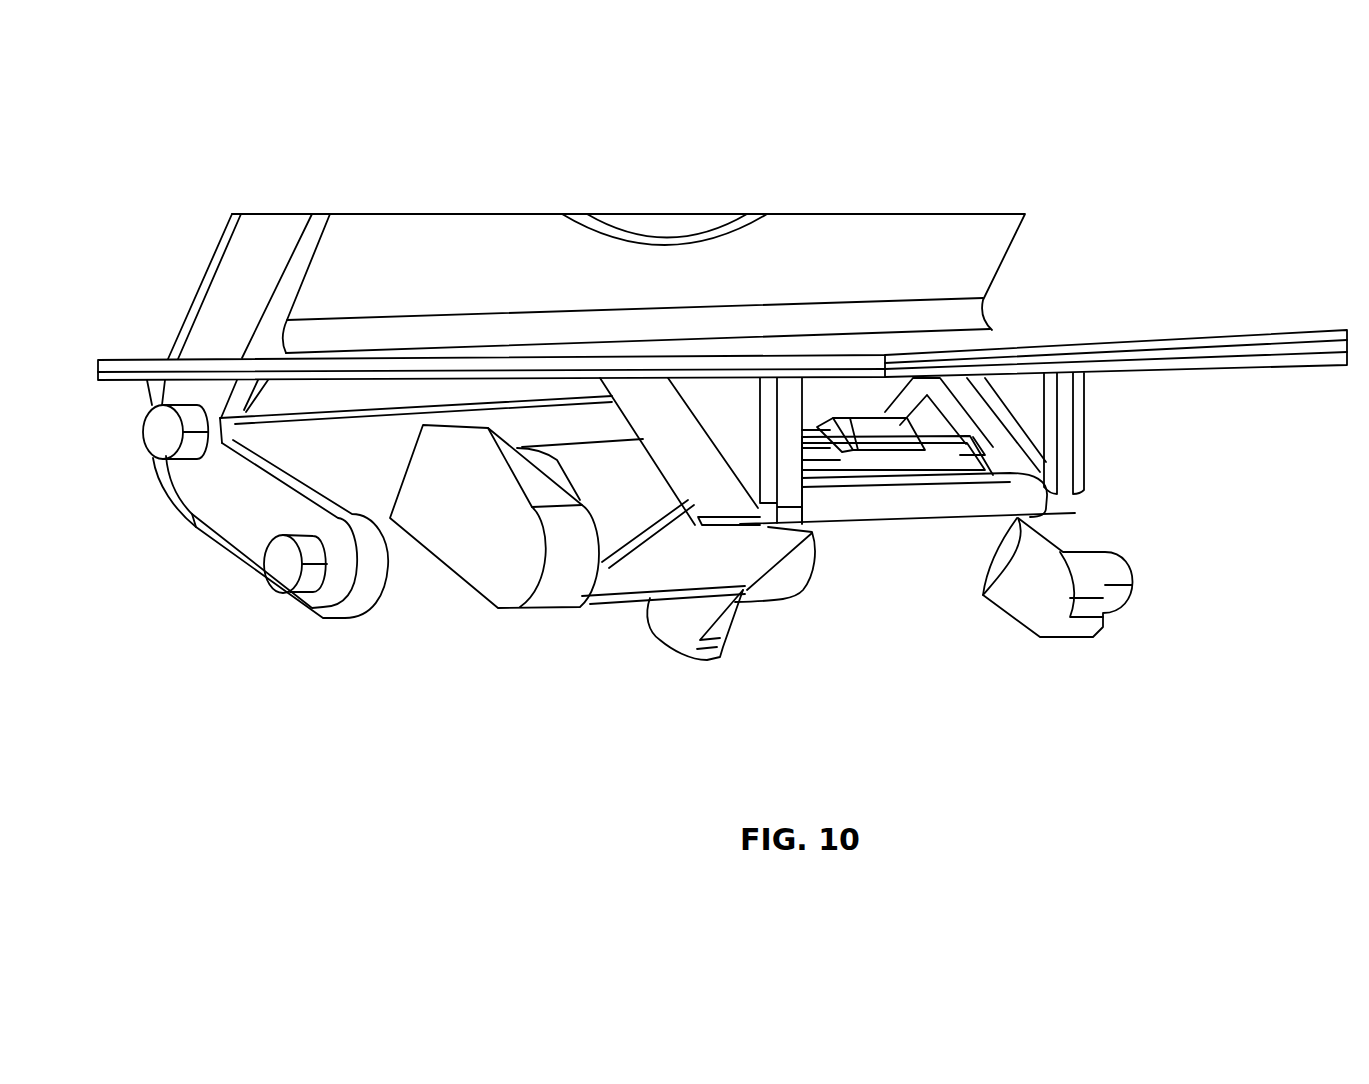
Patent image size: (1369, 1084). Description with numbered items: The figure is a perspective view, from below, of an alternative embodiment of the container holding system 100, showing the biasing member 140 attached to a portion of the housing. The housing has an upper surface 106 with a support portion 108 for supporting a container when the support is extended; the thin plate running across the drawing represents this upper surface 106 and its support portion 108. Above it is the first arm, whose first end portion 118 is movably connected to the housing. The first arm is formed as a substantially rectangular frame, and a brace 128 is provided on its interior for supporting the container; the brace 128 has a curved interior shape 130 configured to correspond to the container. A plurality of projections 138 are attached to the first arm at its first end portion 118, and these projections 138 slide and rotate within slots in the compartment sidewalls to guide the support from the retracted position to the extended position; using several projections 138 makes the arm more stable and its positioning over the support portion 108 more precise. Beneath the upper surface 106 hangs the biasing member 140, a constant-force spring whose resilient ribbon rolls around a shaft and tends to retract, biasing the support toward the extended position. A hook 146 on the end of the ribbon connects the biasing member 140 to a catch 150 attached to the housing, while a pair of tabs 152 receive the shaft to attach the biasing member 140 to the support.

The container holding system 100 is at (698, 464).
The upper surface 106 is at (1317, 347).
The support portion 108 is at (1097, 338).
The first end portion 118 is at (207, 325).
The brace 128 is at (661, 253).
The interior shape 130 is at (727, 233).
The projection 138 is at (162, 433).
The biasing member 140 is at (663, 556).
The hook 146 is at (880, 437).
The catch 150 is at (883, 500).
The tab 152 is at (502, 577).